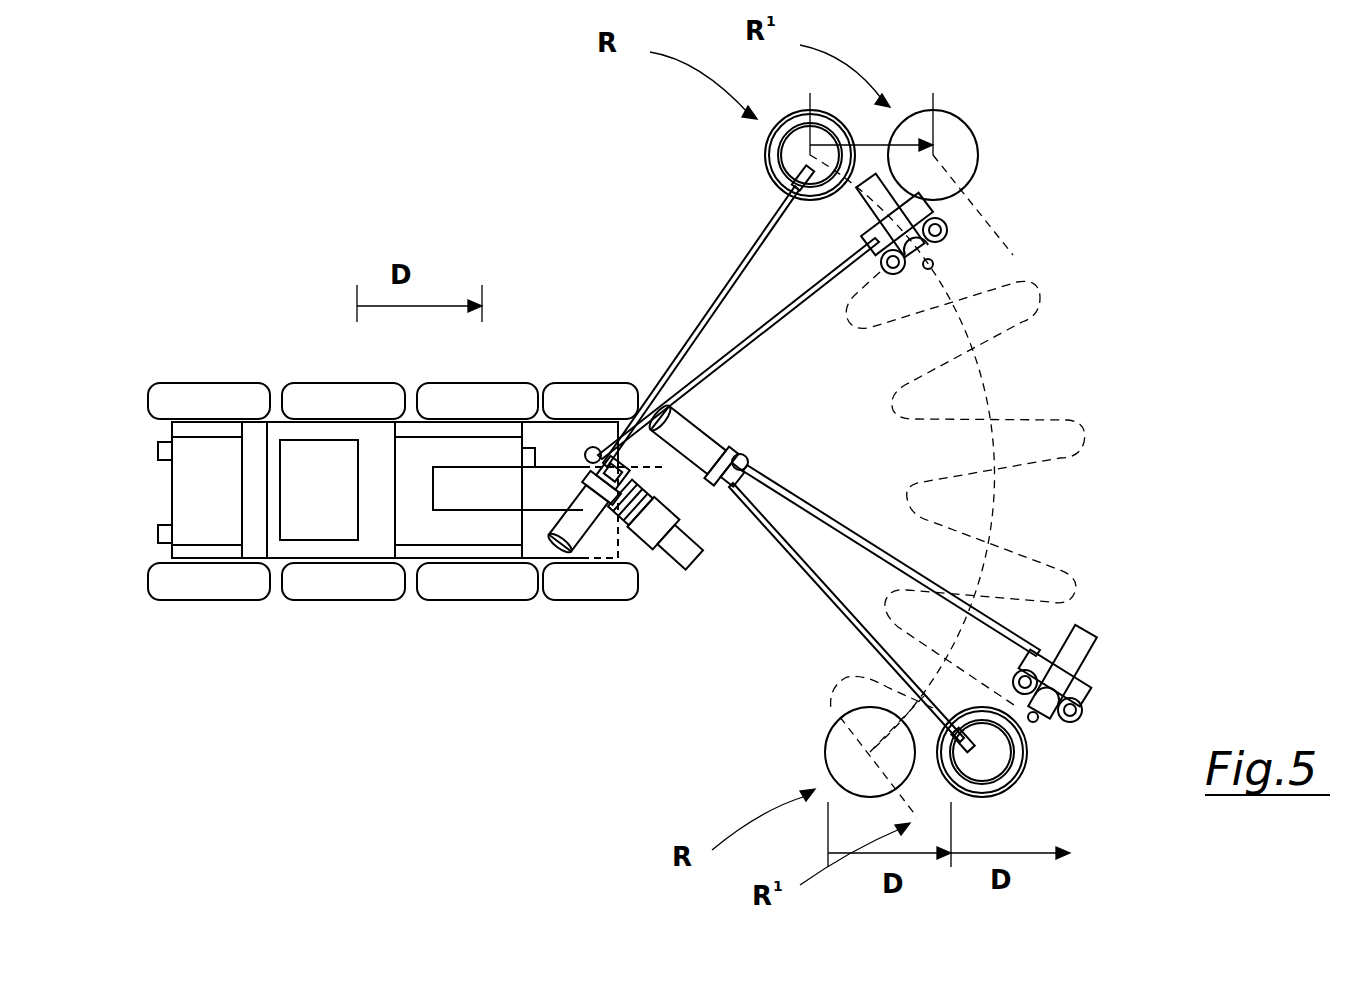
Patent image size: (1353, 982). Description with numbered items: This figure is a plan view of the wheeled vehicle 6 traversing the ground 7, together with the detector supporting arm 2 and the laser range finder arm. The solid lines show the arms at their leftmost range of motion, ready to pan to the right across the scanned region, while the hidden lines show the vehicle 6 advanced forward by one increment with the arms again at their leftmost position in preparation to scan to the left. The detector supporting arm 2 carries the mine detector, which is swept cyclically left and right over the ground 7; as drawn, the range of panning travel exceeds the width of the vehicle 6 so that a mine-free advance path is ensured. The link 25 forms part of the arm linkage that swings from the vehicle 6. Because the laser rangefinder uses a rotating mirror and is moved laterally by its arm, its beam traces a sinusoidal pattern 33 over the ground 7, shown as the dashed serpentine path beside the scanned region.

The detector supporting arm 2 is at (737, 263).
The wheeled vehicle 6 is at (380, 532).
The ground 7 is at (1224, 339).
The link 25 is at (823, 512).
The sinusoidal pattern 33 is at (1045, 462).